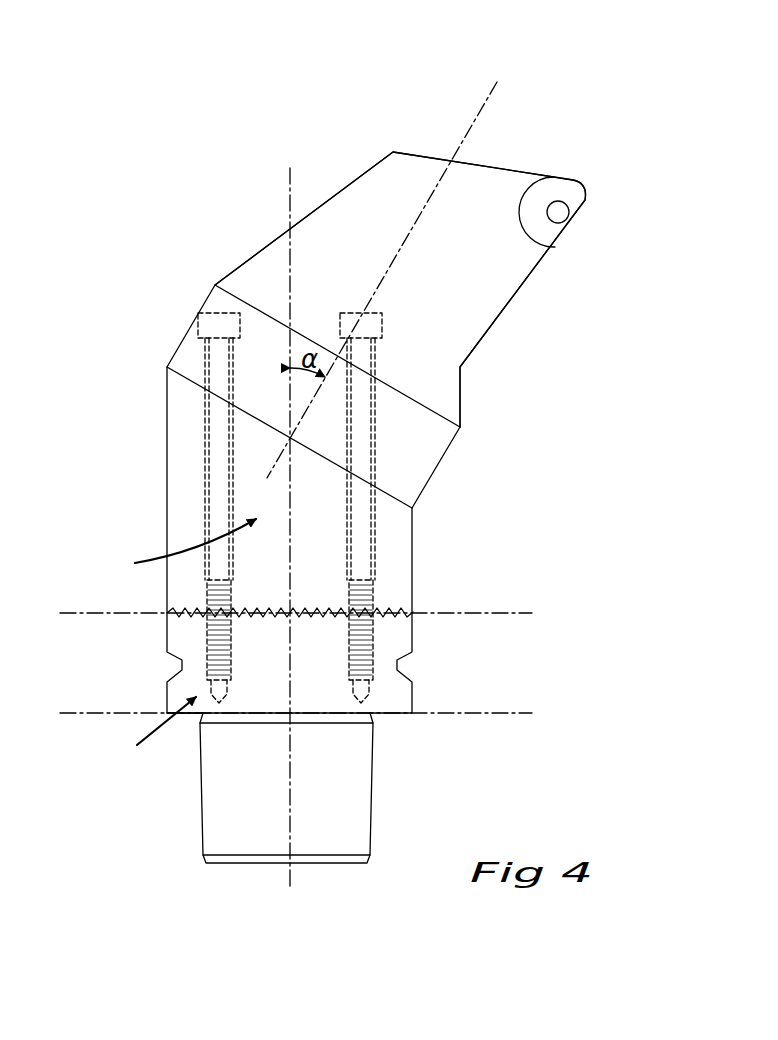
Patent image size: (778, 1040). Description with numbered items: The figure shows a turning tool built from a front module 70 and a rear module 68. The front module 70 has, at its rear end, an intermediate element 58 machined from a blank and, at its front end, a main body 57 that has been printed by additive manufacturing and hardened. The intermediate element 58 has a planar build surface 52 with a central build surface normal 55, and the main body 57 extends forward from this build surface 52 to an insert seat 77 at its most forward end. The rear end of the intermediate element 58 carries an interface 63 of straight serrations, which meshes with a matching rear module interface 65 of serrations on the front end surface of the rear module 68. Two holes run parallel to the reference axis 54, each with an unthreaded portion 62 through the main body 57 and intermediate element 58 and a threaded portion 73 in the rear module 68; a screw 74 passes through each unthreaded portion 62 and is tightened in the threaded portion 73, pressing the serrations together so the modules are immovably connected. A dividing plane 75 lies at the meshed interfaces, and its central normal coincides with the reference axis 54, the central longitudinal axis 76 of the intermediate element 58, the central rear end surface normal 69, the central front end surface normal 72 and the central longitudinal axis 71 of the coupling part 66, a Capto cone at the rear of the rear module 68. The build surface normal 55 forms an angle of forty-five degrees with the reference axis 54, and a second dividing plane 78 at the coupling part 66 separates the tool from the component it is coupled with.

The build surface 52 is at (387, 490).
The reference axis 54 is at (259, 449).
The central build surface normal 55 is at (482, 110).
The main body 57 is at (460, 346).
The intermediate element 58 is at (185, 508).
The unthreaded portion 62 is at (207, 408).
The interface 63 is at (380, 616).
The rear module interface 65 is at (313, 610).
The coupling part 66 is at (352, 780).
The rear module 68 is at (151, 730).
The central rear end surface normal 69 is at (259, 462).
The front module 70 is at (177, 548).
The central longitudinal axis 71 is at (259, 475).
The central front end surface normal 72 is at (259, 489).
The threaded portion 73 is at (207, 688).
The screw 74 is at (213, 318).
The dividing plane 75 is at (507, 613).
The central longitudinal axis 76 is at (290, 200).
The insert seat 77 is at (577, 205).
The second dividing plane 78 is at (507, 713).